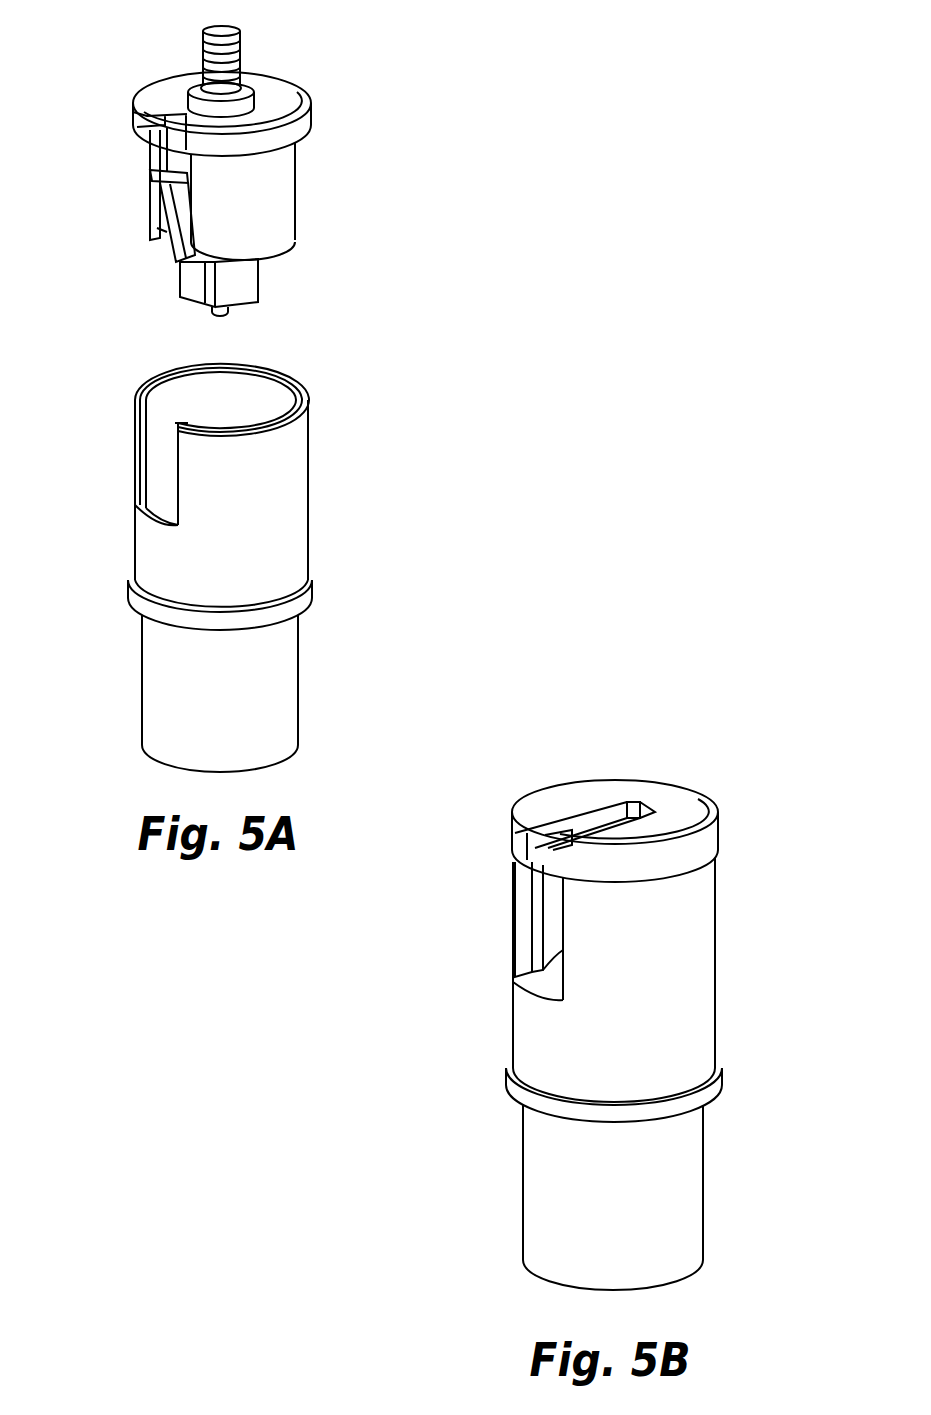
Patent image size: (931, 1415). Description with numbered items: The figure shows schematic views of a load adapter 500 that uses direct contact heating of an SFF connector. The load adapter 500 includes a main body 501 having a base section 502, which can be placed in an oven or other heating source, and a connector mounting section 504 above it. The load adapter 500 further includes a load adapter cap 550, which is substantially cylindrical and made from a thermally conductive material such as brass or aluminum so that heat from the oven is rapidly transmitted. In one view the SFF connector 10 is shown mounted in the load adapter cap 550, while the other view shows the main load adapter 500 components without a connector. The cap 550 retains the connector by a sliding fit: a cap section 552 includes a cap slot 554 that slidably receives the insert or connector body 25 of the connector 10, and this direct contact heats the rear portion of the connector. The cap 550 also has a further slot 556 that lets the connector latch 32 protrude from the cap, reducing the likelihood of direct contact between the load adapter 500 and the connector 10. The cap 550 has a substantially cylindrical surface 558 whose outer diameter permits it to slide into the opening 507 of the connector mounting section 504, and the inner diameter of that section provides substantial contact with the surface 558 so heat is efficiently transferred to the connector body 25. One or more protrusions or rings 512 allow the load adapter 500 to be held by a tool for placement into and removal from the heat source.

In FIG. 5A, the load adapter 500 is at (366, 59).
In FIG. 5B, the load adapter 500 is at (735, 726).
In FIG. 5A, the load adapter cap 550 is at (308, 178).
In FIG. 5B, the load adapter cap 550 is at (698, 783).
In FIG. 5A, the insert or connector body 25 is at (241, 56).
In FIG. 5A, the cap section 552 is at (176, 74).
In FIG. 5A, the cap slot 554 is at (152, 124).
In FIG. 5A, the connector latch 32 is at (155, 171).
In FIG. 5A, the SFF connector 10 is at (162, 252).
In FIG. 5A, the cylindrical surface 558 is at (268, 242).
In FIG. 5A, the further slot 556 is at (182, 246).
In FIG. 5A, the main body 501 is at (120, 530).
In FIG. 5B, the main body 501 is at (496, 1018).
In FIG. 5A, the connector mounting section 504 is at (308, 495).
In FIG. 5B, the connector mounting section 504 is at (718, 975).
In FIG. 5A, the opening 507 is at (285, 378).
In FIG. 5A, the protrusions or rings 512 is at (310, 590).
In FIG. 5A, the base section 502 is at (296, 690).
In FIG. 5B, the base section 502 is at (704, 1165).